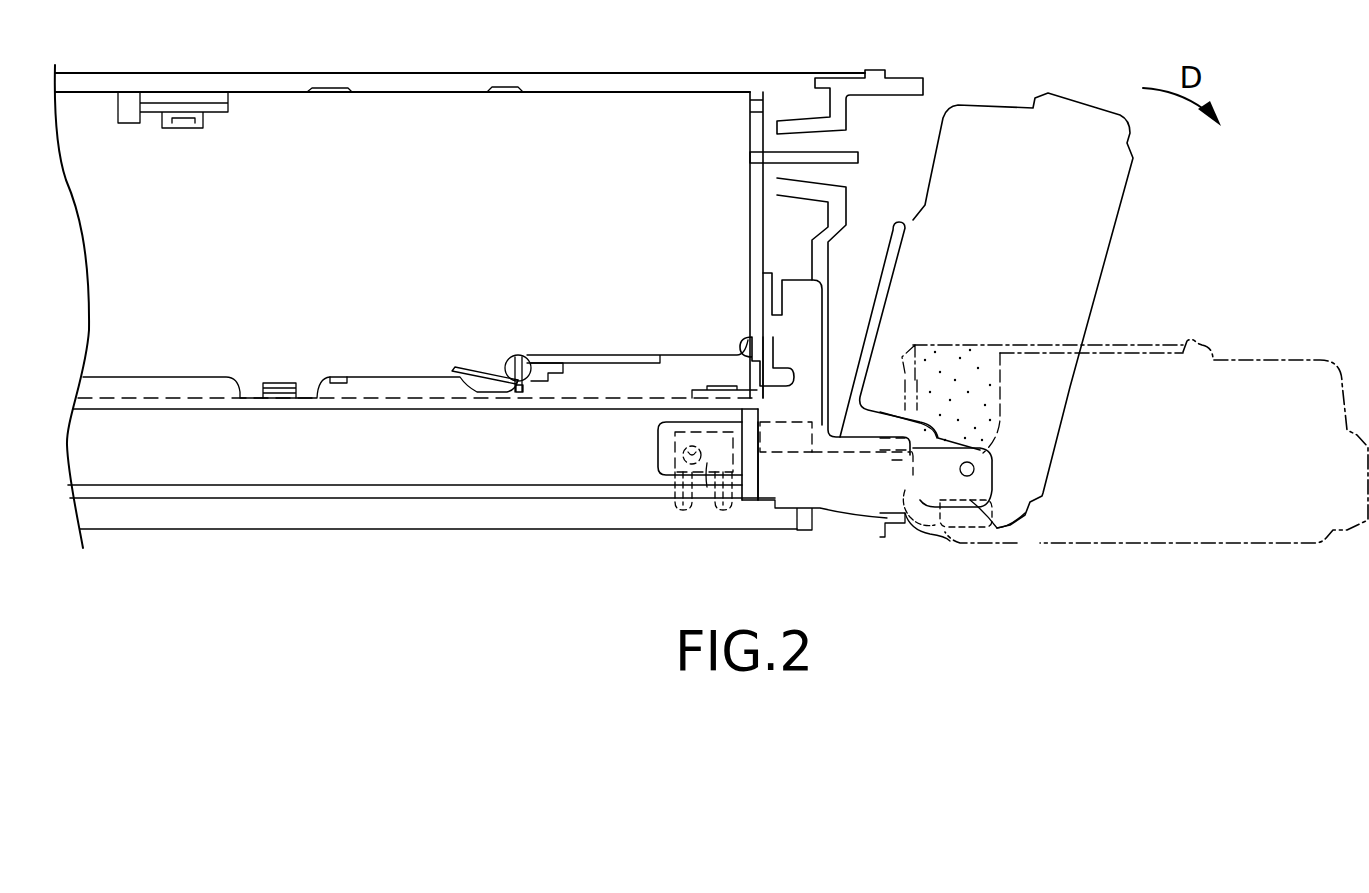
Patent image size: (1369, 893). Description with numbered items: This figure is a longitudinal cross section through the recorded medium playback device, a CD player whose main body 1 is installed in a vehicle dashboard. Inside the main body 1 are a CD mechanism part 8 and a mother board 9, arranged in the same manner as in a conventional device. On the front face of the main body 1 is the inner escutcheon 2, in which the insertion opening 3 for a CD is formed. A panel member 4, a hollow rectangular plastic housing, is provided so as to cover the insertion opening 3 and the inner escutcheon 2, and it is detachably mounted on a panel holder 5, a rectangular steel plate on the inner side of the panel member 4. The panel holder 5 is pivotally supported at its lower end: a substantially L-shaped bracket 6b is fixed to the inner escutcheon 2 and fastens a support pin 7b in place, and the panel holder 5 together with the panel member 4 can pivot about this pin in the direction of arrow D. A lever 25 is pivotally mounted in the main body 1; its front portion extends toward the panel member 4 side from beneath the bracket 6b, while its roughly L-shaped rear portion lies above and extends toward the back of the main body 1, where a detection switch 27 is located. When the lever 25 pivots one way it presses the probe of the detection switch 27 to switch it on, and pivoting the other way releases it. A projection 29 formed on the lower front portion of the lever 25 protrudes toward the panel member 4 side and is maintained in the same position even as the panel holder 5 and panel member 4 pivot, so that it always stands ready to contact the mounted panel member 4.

The main body 1 is at (731, 52).
The inner escutcheon 2 is at (875, 70).
The insertion opening 3 is at (860, 137).
The panel member 4 is at (1093, 242).
The panel holder 5 is at (883, 263).
The bracket 6b is at (803, 347).
The support pin 7b is at (970, 476).
The CD mechanism part 8 is at (448, 125).
The mother board 9 is at (483, 493).
The lever 25 is at (820, 517).
The detection switch 27 is at (708, 512).
The projection 29 is at (928, 542).